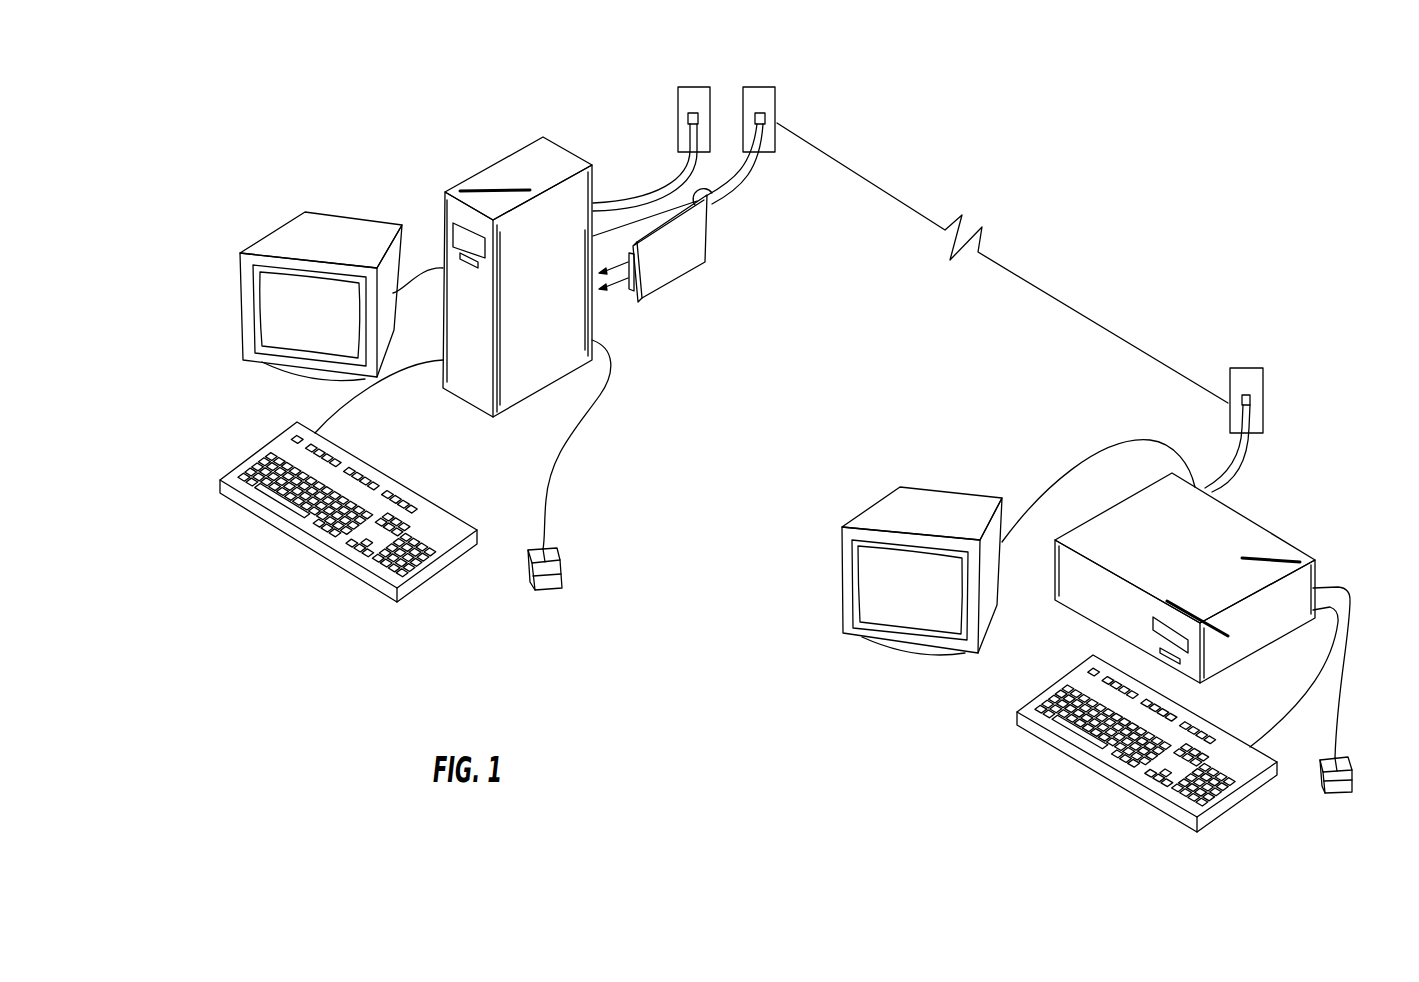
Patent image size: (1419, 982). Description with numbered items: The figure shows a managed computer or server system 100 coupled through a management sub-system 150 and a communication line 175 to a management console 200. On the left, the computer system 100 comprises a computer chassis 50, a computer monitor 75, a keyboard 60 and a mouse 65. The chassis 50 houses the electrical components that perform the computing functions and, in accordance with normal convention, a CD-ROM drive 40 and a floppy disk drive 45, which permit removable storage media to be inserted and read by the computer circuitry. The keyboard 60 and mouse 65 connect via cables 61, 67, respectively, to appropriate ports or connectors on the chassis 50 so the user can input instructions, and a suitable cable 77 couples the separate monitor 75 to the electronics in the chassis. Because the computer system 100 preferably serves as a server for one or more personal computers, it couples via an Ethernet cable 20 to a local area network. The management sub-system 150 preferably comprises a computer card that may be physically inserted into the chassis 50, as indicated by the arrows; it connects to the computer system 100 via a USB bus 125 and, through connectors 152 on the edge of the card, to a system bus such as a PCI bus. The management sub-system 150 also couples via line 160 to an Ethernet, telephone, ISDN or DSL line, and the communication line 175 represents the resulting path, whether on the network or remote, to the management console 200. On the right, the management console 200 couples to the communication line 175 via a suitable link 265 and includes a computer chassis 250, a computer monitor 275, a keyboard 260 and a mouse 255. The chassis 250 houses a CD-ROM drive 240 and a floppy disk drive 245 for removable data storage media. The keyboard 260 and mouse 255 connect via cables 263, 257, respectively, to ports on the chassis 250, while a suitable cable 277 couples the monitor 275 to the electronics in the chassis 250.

The computer system 100 is at (297, 156).
The computer chassis 50 is at (490, 266).
The CD-ROM drive 40 is at (463, 225).
The floppy disk drive 45 is at (467, 249).
The computer monitor 75 is at (272, 228).
The cable 77 is at (418, 284).
The cable 61 is at (365, 398).
The keyboard 60 is at (267, 523).
The mouse 65 is at (548, 589).
The cable 67 is at (553, 463).
The Ethernet cable 20 is at (643, 190).
The USB bus 125 is at (708, 194).
The management sub-system 150 is at (662, 278).
The connectors 152 is at (628, 290).
The line 160 is at (740, 200).
The communication line 175 is at (917, 208).
The management console 200 is at (971, 709).
The computer chassis 250 is at (1183, 578).
The CD-ROM drive 240 is at (1166, 613).
The floppy disk drive 245 is at (1162, 656).
The computer monitor 275 is at (885, 492).
The cable 277 is at (1060, 497).
The link 265 is at (1250, 454).
The cable 263 is at (1282, 718).
The keyboard 260 is at (1107, 780).
The mouse 255 is at (1343, 798).
The cable 257 is at (1338, 698).